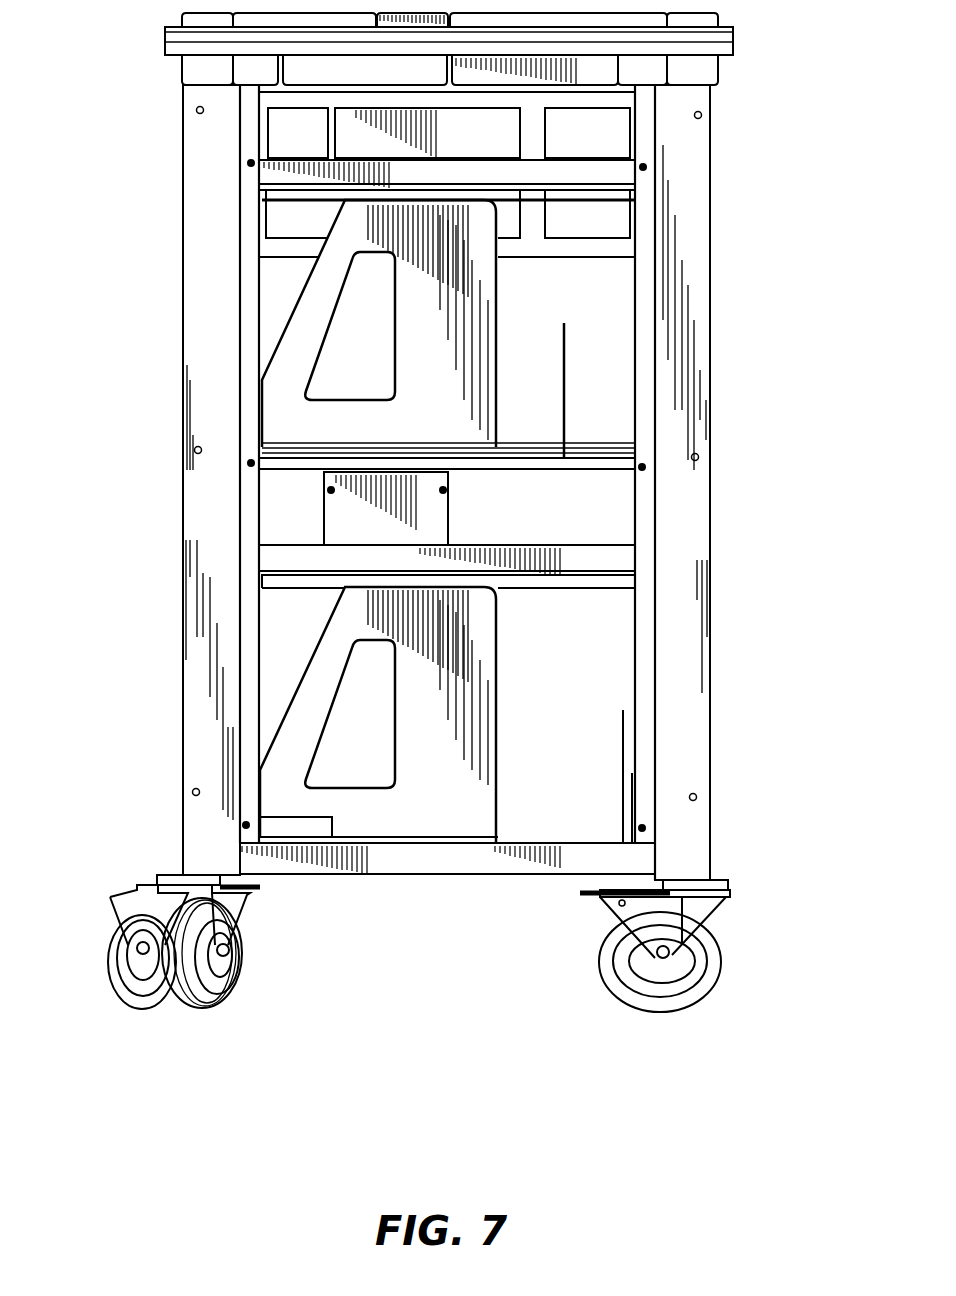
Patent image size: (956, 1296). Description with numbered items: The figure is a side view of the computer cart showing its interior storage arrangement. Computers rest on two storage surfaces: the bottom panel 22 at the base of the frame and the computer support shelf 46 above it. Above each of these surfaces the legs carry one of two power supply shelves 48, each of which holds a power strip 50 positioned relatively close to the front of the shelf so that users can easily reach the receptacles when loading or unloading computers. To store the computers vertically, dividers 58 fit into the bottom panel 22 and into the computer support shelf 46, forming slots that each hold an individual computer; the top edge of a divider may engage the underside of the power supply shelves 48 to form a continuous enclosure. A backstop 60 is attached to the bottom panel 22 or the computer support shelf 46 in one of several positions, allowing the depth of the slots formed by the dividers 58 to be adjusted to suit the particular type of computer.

The bottom panel 22 is at (612, 850).
The computer support shelf 46 is at (583, 456).
The power supply shelves 48 is at (582, 174).
The power strips 50 is at (385, 515).
The dividers 58 is at (437, 344).
The backstop 60 is at (564, 408).